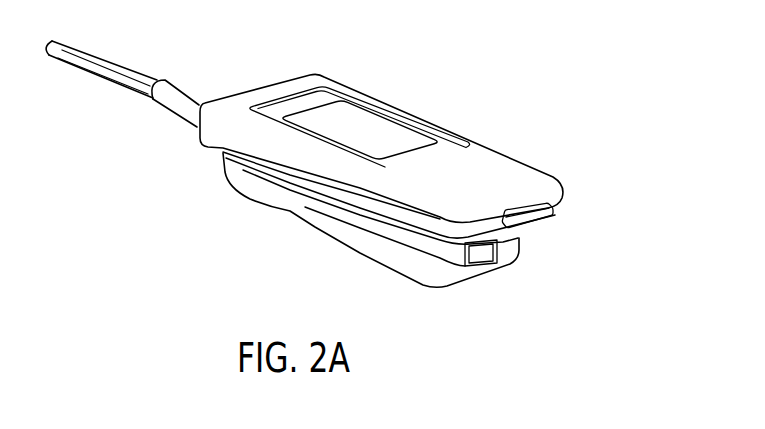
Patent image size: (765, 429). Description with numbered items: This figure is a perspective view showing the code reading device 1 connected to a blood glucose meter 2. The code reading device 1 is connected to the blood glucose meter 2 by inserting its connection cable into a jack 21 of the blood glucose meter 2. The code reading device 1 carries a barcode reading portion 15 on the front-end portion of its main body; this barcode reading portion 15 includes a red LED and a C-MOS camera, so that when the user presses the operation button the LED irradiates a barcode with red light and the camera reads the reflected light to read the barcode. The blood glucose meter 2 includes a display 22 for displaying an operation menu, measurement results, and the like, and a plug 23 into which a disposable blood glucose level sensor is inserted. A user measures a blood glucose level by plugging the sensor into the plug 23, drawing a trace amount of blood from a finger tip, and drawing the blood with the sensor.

The code reading device 1 is at (317, 226).
The blood glucose meter 2 is at (528, 98).
The barcode reading portion 15 is at (480, 252).
The jack 21 is at (184, 128).
The display 22 is at (373, 126).
The plug 23 is at (545, 228).